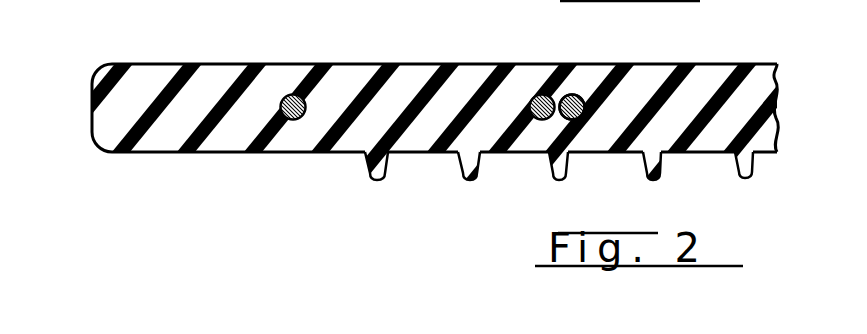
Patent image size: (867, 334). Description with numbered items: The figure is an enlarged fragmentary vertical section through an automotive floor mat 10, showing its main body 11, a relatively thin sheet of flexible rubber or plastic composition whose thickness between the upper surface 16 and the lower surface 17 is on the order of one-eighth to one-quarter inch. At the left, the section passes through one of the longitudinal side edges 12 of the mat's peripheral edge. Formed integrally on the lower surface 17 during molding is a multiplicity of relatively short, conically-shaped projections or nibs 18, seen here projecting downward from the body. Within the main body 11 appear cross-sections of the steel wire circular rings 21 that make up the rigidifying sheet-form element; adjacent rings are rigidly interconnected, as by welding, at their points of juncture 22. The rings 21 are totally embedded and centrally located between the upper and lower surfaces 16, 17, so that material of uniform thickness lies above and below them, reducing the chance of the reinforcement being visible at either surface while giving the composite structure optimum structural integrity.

The floor mat 10 is at (259, 46).
The main body 11 is at (140, 88).
The longitudinal side edges 12 is at (90, 97).
The upper surface 16 is at (210, 63).
The lower surface 17 is at (211, 152).
The nibs 18 is at (461, 176).
The circular rings 21 is at (296, 94).
The points of juncture 22 is at (568, 94).